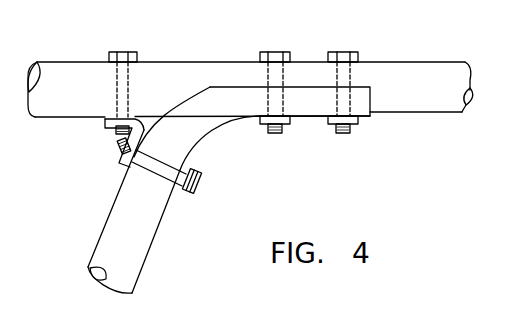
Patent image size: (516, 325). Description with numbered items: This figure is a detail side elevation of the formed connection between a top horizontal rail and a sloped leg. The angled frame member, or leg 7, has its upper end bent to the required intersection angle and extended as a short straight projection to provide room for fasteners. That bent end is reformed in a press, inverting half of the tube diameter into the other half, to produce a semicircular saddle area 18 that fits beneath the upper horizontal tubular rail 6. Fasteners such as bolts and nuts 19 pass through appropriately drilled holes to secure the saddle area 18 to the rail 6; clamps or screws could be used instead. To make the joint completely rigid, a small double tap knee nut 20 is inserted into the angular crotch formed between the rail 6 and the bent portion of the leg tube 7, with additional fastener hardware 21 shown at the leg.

The upper horizontal tubular rail 6 is at (433, 60).
The angled frame member (leg) 7 is at (151, 247).
The saddle area 18 is at (305, 118).
The bolts and nuts 19 is at (273, 50).
The double tap knee nut 20 is at (108, 128).
The bolts 21 is at (122, 51).